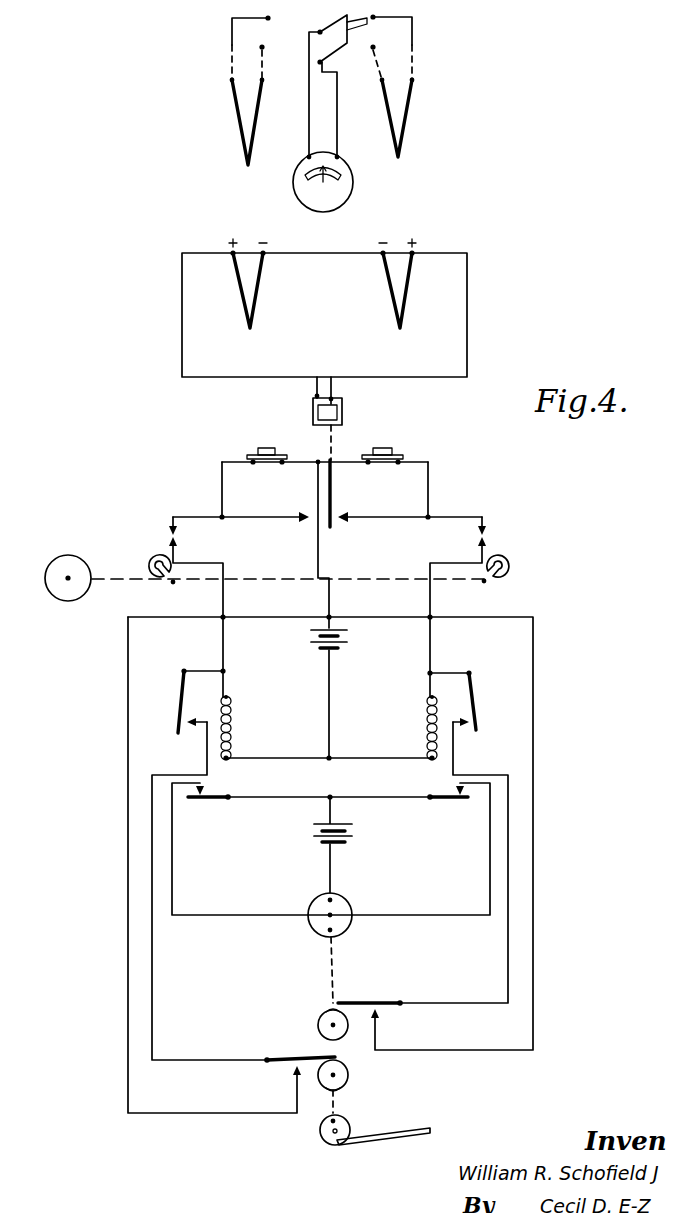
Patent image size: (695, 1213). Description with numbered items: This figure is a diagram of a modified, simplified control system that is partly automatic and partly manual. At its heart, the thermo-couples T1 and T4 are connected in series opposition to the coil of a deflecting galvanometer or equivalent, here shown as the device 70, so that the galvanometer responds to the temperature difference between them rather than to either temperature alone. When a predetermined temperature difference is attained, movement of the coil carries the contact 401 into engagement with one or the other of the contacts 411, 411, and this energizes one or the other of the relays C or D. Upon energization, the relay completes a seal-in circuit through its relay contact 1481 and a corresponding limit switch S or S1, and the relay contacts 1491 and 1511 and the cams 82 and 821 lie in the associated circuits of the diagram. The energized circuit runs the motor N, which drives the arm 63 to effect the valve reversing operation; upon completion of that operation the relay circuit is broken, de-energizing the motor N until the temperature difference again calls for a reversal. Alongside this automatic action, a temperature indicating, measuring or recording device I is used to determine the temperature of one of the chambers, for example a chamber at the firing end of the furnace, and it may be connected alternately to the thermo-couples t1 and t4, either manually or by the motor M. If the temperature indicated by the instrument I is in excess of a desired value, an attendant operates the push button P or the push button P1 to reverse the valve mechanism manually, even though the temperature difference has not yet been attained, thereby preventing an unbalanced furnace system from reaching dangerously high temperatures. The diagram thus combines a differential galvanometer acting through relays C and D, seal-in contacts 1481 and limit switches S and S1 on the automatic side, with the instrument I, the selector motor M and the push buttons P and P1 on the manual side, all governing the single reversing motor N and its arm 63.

The thermo-couple t1 is at (240, 130).
The thermo-couple t4 is at (398, 135).
The temperature indicating, measuring or recording device I is at (335, 207).
The thermo-couple T1 is at (258, 303).
The thermo-couple T4 is at (396, 303).
The galvanometer relay 70 is at (342, 398).
The push button P is at (268, 448).
The push button P1 is at (383, 448).
The contact 401 is at (340, 488).
The contacts 411 is at (257, 517).
The cam 82 is at (160, 566).
The cam 821 is at (498, 567).
The motor M is at (68, 601).
The relay contact 1481 is at (182, 708).
The relay C is at (233, 723).
The relay D is at (427, 727).
The contact 1491 is at (218, 800).
The contact 1511 is at (450, 800).
The motor N is at (348, 935).
The limit switch S is at (390, 1003).
The limit switch S1 is at (307, 1049).
The arm 63 is at (405, 1142).